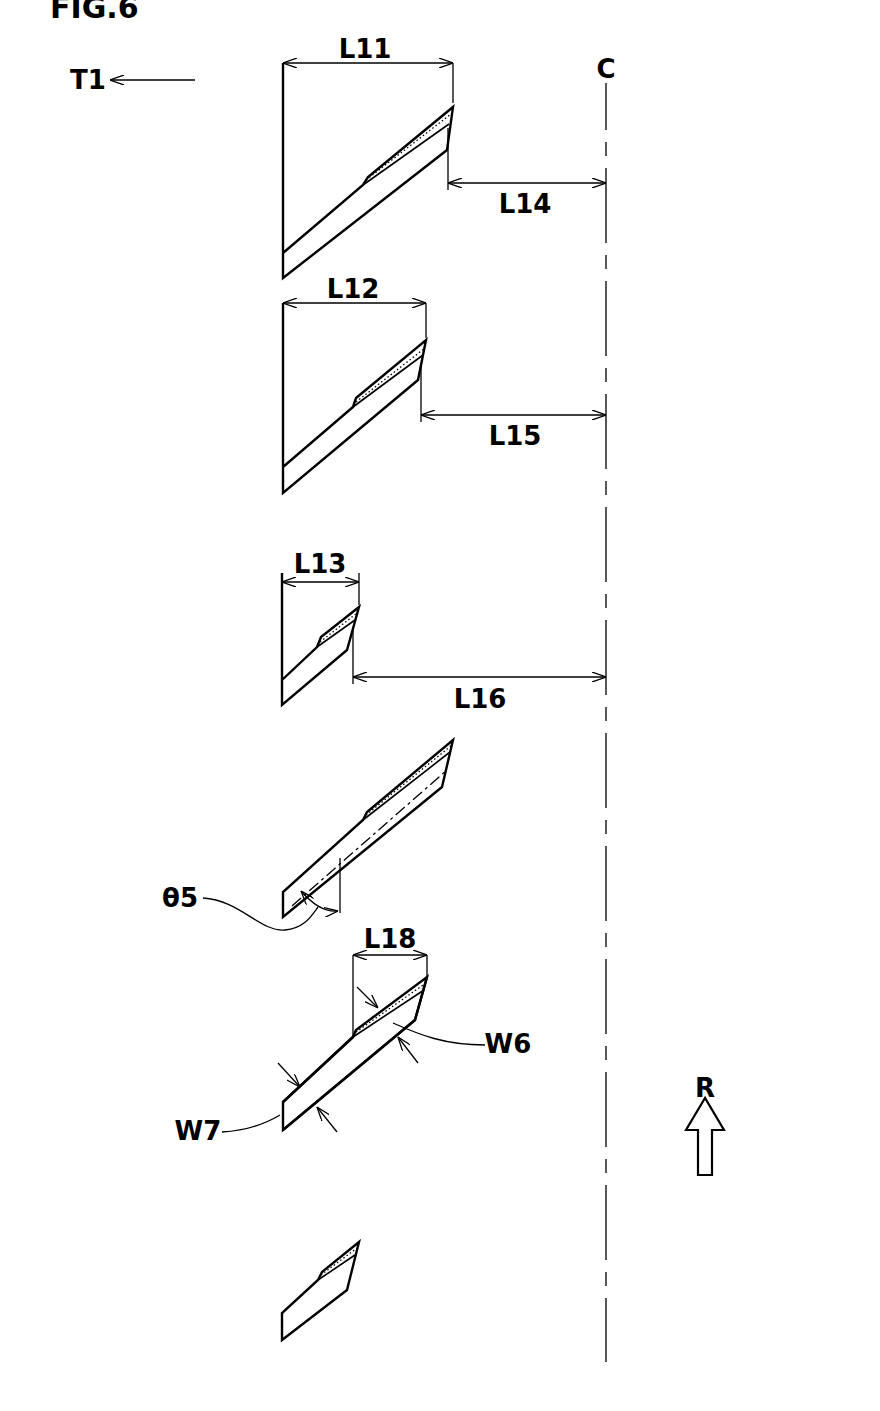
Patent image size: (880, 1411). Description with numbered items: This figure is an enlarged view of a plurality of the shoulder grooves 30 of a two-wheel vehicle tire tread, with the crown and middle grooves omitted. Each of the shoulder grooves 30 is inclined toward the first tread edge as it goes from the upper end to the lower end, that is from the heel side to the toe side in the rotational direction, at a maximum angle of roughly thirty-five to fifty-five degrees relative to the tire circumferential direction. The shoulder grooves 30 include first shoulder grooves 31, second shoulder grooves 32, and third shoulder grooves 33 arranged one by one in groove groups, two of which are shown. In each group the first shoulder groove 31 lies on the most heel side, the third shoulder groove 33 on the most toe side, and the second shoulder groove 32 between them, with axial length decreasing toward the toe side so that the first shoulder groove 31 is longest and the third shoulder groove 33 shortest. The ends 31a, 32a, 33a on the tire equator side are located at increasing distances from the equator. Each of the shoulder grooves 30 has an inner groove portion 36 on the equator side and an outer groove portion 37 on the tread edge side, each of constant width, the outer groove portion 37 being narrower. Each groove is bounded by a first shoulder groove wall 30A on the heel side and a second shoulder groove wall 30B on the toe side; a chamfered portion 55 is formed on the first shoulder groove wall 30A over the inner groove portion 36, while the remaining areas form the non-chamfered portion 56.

The shoulder grooves 30 is at (377, 830).
The first shoulder groove wall 30A is at (345, 1063).
The second shoulder groove wall 30B is at (335, 1063).
The first shoulder groove 31 is at (352, 212).
The end of first shoulder groove 31a is at (447, 128).
The second shoulder groove 32 is at (338, 435).
The end of second shoulder groove 32a is at (422, 362).
The third shoulder groove 33 is at (305, 675).
The end of third shoulder groove 33a is at (355, 630).
The inner groove portion 36 is at (407, 1010).
The outer groove portion 37 is at (322, 1080).
The chamfered portion 55 is at (418, 990).
The non-chamfered portion 56 is at (420, 795).